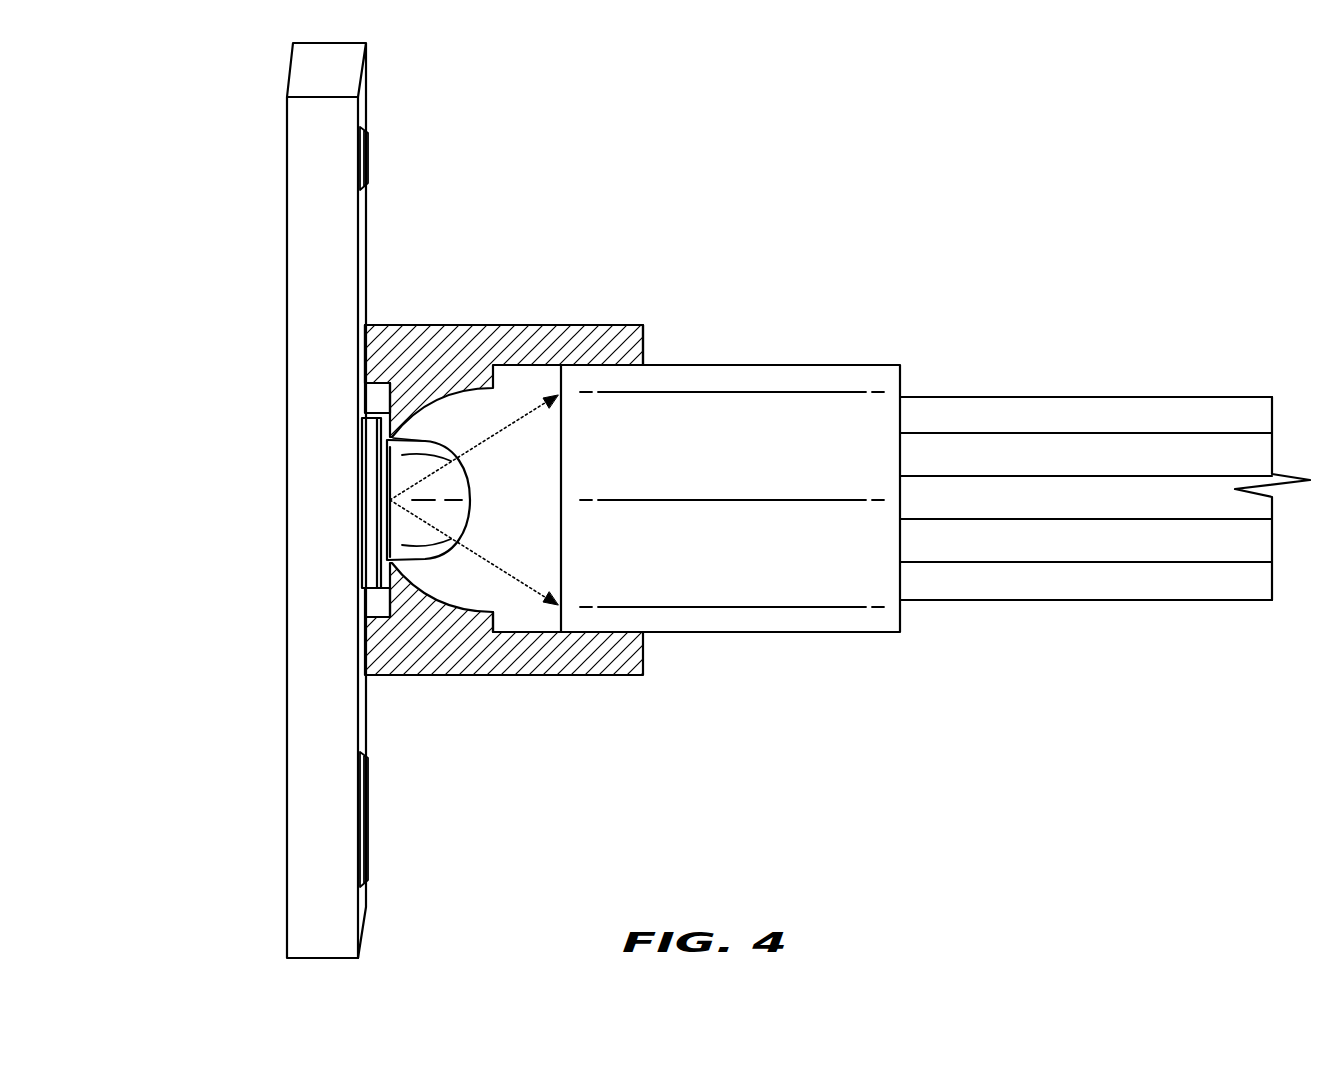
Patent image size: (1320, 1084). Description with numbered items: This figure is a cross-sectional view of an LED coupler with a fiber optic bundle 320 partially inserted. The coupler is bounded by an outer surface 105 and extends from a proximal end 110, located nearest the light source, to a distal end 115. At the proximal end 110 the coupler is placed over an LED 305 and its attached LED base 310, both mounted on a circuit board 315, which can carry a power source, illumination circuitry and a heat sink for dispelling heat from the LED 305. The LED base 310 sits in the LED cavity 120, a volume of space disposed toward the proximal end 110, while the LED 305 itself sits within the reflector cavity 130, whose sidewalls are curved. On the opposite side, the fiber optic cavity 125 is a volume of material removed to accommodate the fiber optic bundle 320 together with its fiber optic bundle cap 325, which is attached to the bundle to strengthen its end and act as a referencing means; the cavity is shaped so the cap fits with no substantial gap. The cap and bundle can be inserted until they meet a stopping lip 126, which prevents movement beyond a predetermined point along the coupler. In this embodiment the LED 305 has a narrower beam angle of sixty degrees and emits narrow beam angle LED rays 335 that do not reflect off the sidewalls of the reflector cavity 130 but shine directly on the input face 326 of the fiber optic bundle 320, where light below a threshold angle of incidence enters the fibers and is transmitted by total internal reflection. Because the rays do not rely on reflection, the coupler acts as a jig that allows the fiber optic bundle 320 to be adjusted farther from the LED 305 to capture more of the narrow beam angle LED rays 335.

The outer surface 105 is at (510, 325).
The proximal end 110 is at (365, 343).
The distal end 115 is at (645, 345).
The LED cavity 120 is at (373, 403).
The fiber optic cavity 125 is at (533, 610).
The stopping lip 126 is at (493, 622).
The reflector cavity 130 is at (460, 582).
The LED 305 is at (436, 416).
The LED base 310 is at (390, 497).
The circuit board 315 is at (292, 121).
The fiber optic bundle 320 is at (968, 397).
The fiber optic bundle cap 325 is at (765, 365).
The input face 326 is at (560, 438).
The narrow beam angle LED rays 335 is at (527, 584).